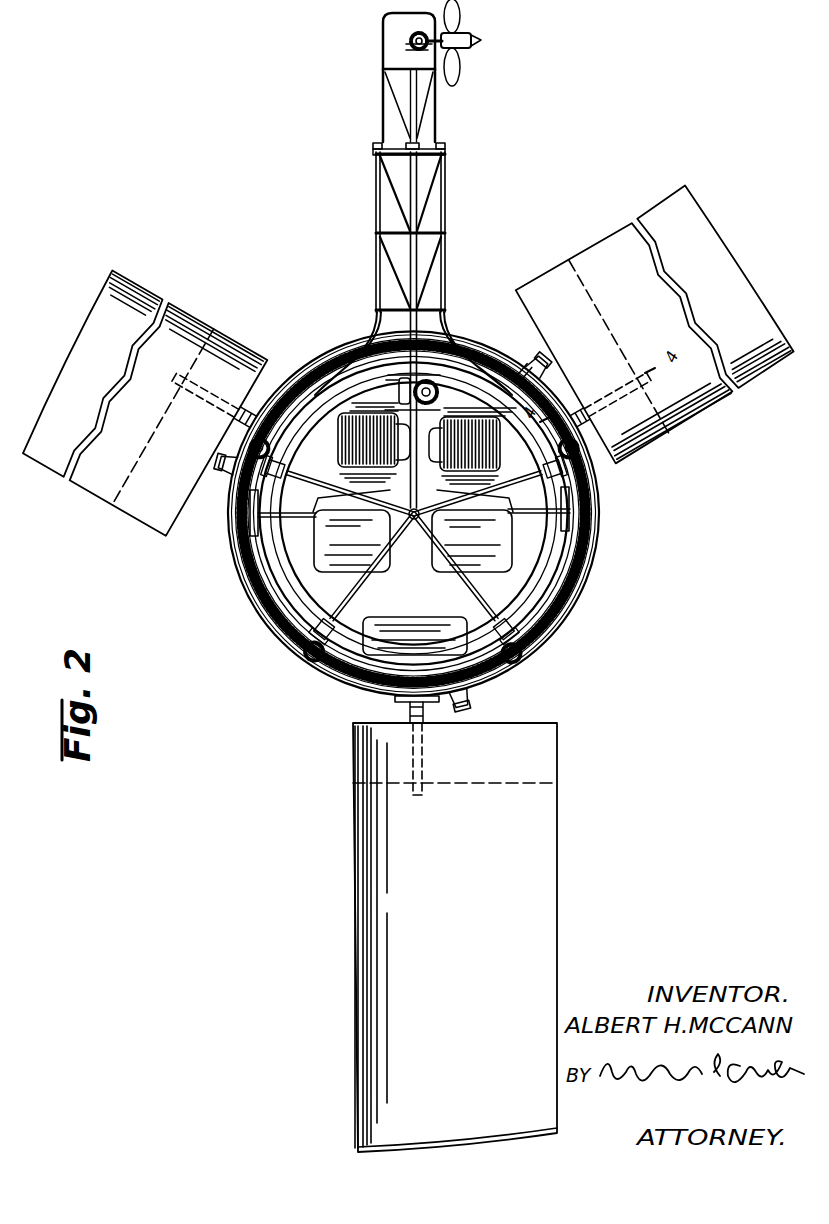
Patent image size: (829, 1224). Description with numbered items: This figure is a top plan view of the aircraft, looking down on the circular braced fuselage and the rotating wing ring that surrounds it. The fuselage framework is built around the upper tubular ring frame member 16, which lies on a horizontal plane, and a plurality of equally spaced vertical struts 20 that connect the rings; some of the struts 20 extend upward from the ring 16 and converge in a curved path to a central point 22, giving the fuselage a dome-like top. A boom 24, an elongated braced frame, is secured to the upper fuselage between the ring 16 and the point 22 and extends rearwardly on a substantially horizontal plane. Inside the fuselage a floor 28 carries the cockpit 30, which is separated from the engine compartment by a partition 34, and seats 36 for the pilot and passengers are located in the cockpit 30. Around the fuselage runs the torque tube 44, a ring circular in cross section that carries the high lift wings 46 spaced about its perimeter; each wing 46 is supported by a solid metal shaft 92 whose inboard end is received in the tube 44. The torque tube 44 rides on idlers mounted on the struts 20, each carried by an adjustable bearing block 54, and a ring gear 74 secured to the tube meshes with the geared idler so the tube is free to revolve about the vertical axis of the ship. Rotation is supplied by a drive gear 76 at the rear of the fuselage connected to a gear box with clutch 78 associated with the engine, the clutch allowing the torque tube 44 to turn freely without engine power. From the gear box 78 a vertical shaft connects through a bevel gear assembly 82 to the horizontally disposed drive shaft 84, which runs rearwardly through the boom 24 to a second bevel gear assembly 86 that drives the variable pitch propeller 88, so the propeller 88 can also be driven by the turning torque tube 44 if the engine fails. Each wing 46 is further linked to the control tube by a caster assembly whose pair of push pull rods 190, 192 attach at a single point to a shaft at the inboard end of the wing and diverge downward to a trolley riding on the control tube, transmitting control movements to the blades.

The upper tubular ring frame member 16 is at (563, 571).
The vertical strut 20 is at (541, 637).
The central point 22 is at (414, 528).
The boom 24 is at (375, 176).
The floor 28 is at (297, 597).
The cockpit 30 is at (501, 427).
The partition 34 is at (538, 514).
The seat 36 is at (318, 543).
The torque tube 44 is at (597, 521).
The high lift wing 46 is at (354, 838).
The bearing block 54 is at (288, 633).
The ring gear 74 is at (233, 572).
The drive gear 76 is at (454, 328).
The gear box with clutch 78 is at (397, 401).
The bevel gear assembly 82 is at (440, 390).
The horizontally disposed drive shaft 84 is at (447, 183).
The bevel gear assembly 86 is at (405, 39).
The variable pitch propeller 88 is at (459, 75).
The solid metal shaft 92 is at (433, 760).
The push pull rod 190 is at (553, 380).
The push pull rod 192 is at (527, 362).